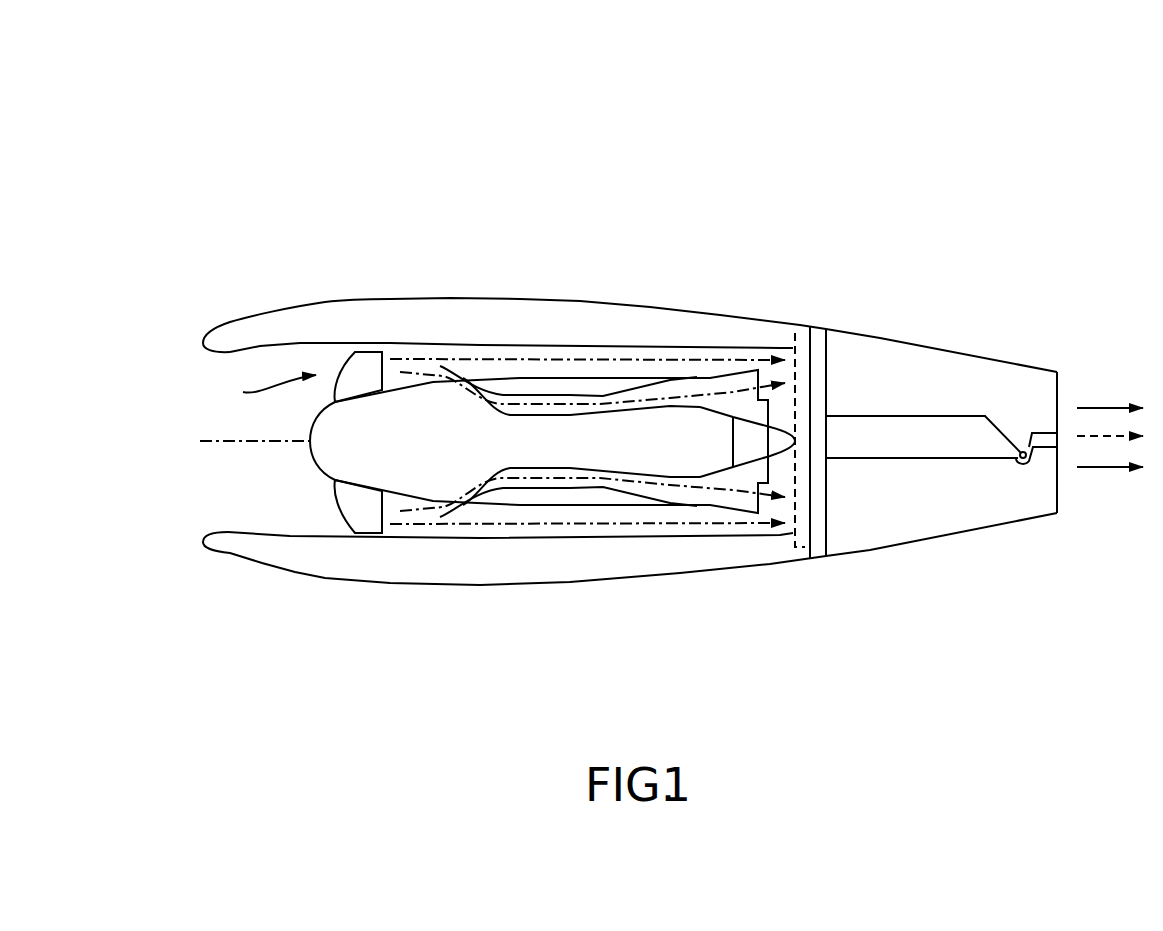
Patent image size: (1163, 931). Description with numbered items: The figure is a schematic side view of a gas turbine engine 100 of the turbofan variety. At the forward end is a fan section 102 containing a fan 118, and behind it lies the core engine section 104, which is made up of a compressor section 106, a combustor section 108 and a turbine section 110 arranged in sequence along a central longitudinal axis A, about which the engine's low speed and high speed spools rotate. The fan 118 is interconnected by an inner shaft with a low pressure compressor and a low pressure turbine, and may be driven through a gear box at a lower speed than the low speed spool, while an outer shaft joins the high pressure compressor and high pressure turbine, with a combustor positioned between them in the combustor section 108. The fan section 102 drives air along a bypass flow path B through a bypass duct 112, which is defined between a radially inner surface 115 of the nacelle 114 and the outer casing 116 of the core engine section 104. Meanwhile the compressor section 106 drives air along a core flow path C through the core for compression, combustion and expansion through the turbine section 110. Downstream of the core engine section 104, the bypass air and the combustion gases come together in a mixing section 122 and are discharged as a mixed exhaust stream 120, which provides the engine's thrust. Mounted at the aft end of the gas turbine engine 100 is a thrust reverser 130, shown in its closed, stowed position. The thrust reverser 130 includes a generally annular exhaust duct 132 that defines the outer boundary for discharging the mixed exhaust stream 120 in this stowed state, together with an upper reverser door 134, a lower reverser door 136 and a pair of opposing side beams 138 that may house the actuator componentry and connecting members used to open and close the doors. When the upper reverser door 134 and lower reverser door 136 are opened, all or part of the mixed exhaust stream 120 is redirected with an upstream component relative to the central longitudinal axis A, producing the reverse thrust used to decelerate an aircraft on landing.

The gas turbine engine 100 is at (355, 151).
The fan section 102 is at (252, 385).
The core engine section 104 is at (472, 437).
The compressor section 106 is at (495, 388).
The combustor section 108 is at (605, 390).
The turbine section 110 is at (705, 368).
The bypass duct 112 is at (493, 517).
The nacelle 114 is at (325, 560).
The radially inner surface 115 is at (548, 540).
The outer casing 116 is at (602, 505).
The fan 118 is at (345, 520).
The mixed exhaust stream 120 is at (1101, 408).
The mixing section 122 is at (791, 346).
The thrust reverser 130 is at (921, 296).
The exhaust duct 132 is at (1048, 518).
The upper reverser door 134 is at (949, 350).
The lower reverser door 136 is at (897, 548).
The side beams 138 is at (863, 427).
The central longitudinal axis A is at (245, 445).
The bypass flow path B is at (433, 528).
The core flow path C is at (727, 495).